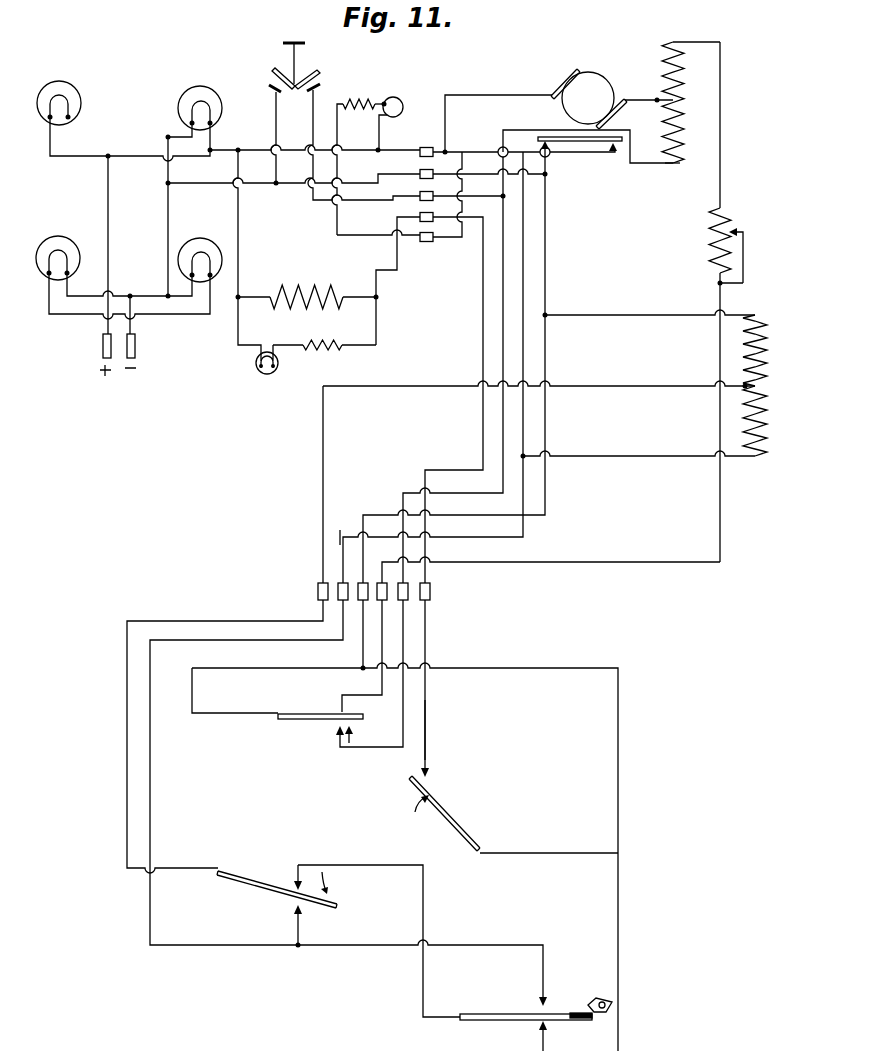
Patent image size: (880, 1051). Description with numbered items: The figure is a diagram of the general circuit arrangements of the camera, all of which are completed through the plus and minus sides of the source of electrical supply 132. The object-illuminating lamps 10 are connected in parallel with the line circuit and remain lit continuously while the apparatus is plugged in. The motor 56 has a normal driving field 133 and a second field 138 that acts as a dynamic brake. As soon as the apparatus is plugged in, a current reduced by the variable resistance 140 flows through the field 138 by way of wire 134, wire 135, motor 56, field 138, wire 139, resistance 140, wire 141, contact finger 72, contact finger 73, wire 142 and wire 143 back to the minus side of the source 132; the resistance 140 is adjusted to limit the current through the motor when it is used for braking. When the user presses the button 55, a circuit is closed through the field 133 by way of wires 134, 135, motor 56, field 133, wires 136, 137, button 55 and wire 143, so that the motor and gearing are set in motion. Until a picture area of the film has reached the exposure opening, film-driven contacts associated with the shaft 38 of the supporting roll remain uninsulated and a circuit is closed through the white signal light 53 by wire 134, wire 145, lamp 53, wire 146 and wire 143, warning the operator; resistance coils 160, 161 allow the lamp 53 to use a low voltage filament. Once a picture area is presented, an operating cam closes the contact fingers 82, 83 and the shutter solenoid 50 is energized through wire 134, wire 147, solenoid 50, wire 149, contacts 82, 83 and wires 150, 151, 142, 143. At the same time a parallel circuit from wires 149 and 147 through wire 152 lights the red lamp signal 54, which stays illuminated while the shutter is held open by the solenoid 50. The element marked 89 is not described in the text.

The object-illuminating lamps 10 is at (68, 87).
The wire 134 is at (222, 149).
The source of electrical supply 132 is at (102, 348).
The button 55 is at (283, 45).
The resistance coil 160 is at (357, 97).
The white signal light 53 is at (397, 97).
The wire 145 is at (380, 136).
The wire 135 is at (493, 93).
The motor 56 is at (603, 87).
The wire 136 is at (516, 130).
The field 138 is at (675, 47).
The normal driving field 133 is at (678, 165).
The wire 139 is at (723, 143).
The variable resistance 140 is at (707, 250).
The wire 141 is at (626, 562).
The wire 143 is at (507, 178).
The wire 137 is at (485, 198).
The wire 149 is at (399, 258).
The wire 147 is at (238, 270).
The solenoid 50 is at (303, 287).
The resistance coil 161 is at (320, 351).
The wire 152 is at (360, 346).
The red lamp signal 54 is at (267, 375).
The wire 146 is at (367, 236).
The wire 142 is at (375, 512).
The wire 151 is at (560, 668).
The contact finger 73 is at (297, 714).
The contact finger 72 is at (341, 708).
The contact finger 82 is at (424, 733).
The contact finger 83 is at (448, 811).
The wire 150 is at (542, 852).
The pivot 89 is at (593, 1003).
The shaft 38 is at (602, 1014).